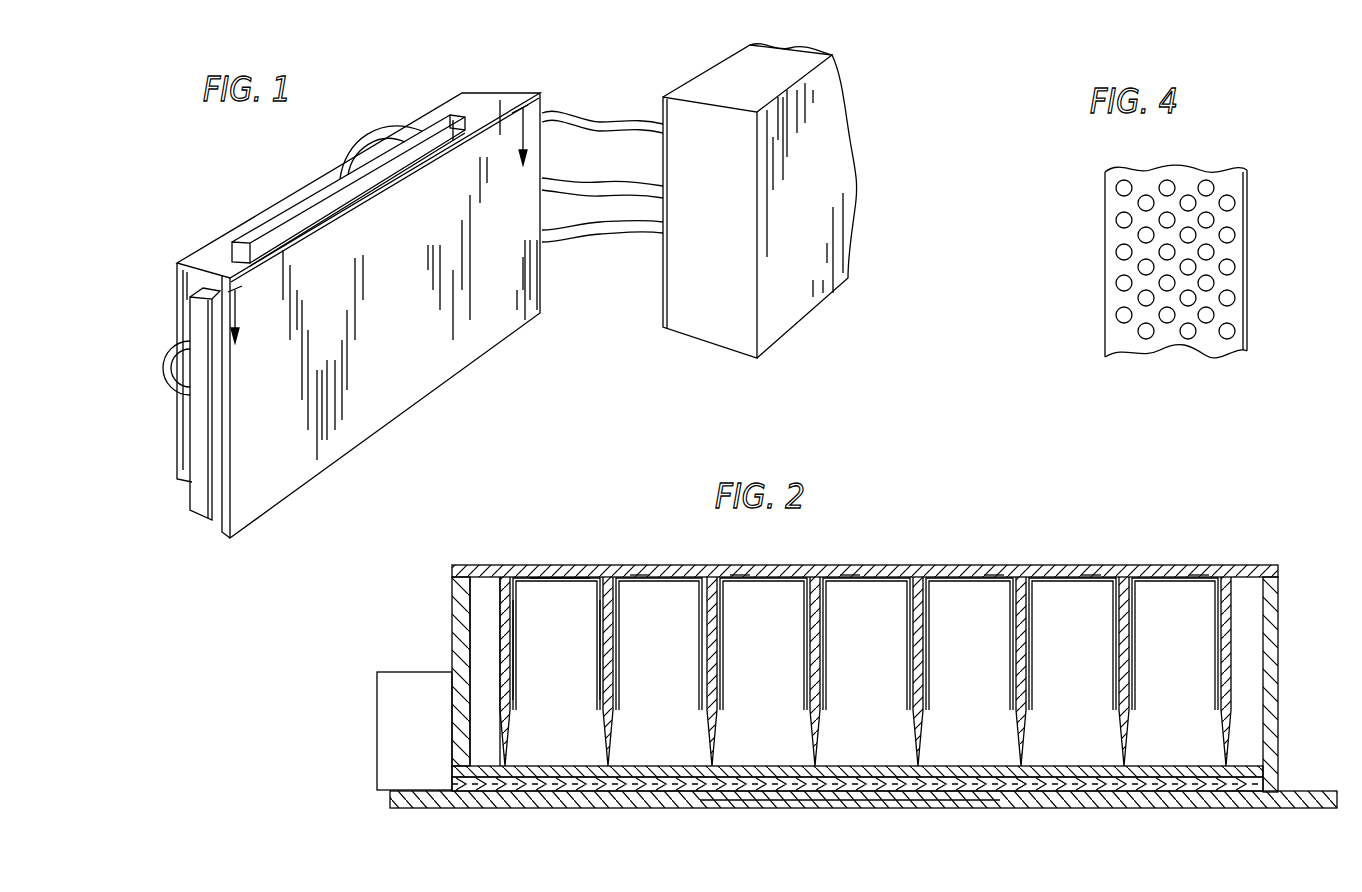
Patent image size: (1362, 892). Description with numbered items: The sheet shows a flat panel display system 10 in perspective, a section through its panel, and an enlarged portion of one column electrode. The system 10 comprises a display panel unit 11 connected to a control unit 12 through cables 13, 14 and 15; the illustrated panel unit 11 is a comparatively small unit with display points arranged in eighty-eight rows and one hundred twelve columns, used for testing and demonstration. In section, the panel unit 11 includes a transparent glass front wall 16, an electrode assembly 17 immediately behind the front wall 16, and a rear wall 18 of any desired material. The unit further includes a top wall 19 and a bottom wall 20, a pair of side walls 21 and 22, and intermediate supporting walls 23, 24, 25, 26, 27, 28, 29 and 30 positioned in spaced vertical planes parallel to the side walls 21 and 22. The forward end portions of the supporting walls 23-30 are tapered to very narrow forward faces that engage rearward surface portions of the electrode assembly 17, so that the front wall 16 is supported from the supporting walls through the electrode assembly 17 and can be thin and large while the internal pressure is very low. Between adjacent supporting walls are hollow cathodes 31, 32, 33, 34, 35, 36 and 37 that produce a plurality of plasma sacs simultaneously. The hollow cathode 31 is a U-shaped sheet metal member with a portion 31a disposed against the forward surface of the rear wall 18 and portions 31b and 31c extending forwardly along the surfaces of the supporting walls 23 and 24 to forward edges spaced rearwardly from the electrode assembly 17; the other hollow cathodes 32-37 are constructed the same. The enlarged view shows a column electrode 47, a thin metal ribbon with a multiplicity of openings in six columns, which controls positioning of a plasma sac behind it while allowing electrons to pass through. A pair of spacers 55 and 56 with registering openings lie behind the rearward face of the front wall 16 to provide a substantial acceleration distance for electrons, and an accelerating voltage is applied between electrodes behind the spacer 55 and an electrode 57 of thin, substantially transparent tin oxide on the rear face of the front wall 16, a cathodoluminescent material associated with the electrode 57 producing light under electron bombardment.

In FIG. 1, the flat panel display system 10 is at (250, 178).
In FIG. 1, the display panel unit 11 is at (543, 94).
In FIG. 1, the control unit 12 is at (848, 105).
In FIG. 1, the cable 13 is at (585, 238).
In FIG. 1, the cable 14 is at (562, 190).
In FIG. 1, the cable 15 is at (595, 125).
In FIG. 2, the transparent glass front wall 16 is at (1257, 808).
In FIG. 2, the electrode assembly 17 is at (1290, 768).
In FIG. 2, the rear wall 18 is at (1253, 568).
In FIG. 1, the top wall 19 is at (212, 254).
In FIG. 2, the bottom wall 20 is at (477, 608).
In FIG. 2, the side wall 21 is at (460, 630).
In FIG. 2, the side wall 22 is at (1278, 670).
In FIG. 2, the intermediate supporting wall 23 is at (511, 625).
In FIG. 2, the intermediate supporting wall 24 is at (614, 625).
In FIG. 2, the intermediate supporting wall 25 is at (719, 630).
In FIG. 2, the intermediate supporting wall 26 is at (822, 627).
In FIG. 2, the intermediate supporting wall 27 is at (924, 623).
In FIG. 2, the intermediate supporting wall 28 is at (1027, 633).
In FIG. 2, the intermediate supporting wall 29 is at (1130, 630).
In FIG. 2, the intermediate supporting wall 30 is at (1233, 637).
In FIG. 2, the hollow cathode 31 is at (560, 575).
In FIG. 2, the hollow cathode rear portion 31a is at (541, 584).
In FIG. 2, the hollow cathode side portion 31b is at (516, 664).
In FIG. 2, the hollow cathode side portion 31c is at (601, 687).
In FIG. 2, the hollow cathode 32 is at (637, 574).
In FIG. 2, the hollow cathode 33 is at (739, 575).
In FIG. 2, the hollow cathode 34 is at (850, 575).
In FIG. 2, the hollow cathode 35 is at (994, 575).
In FIG. 2, the hollow cathode 36 is at (1091, 573).
In FIG. 2, the hollow cathode 37 is at (1199, 573).
In FIG. 4, the column electrode 47 is at (1243, 230).
In FIG. 2, the spacer 55 is at (457, 787).
In FIG. 2, the spacer 56 is at (460, 795).
In FIG. 2, the electrode 57 is at (1142, 795).